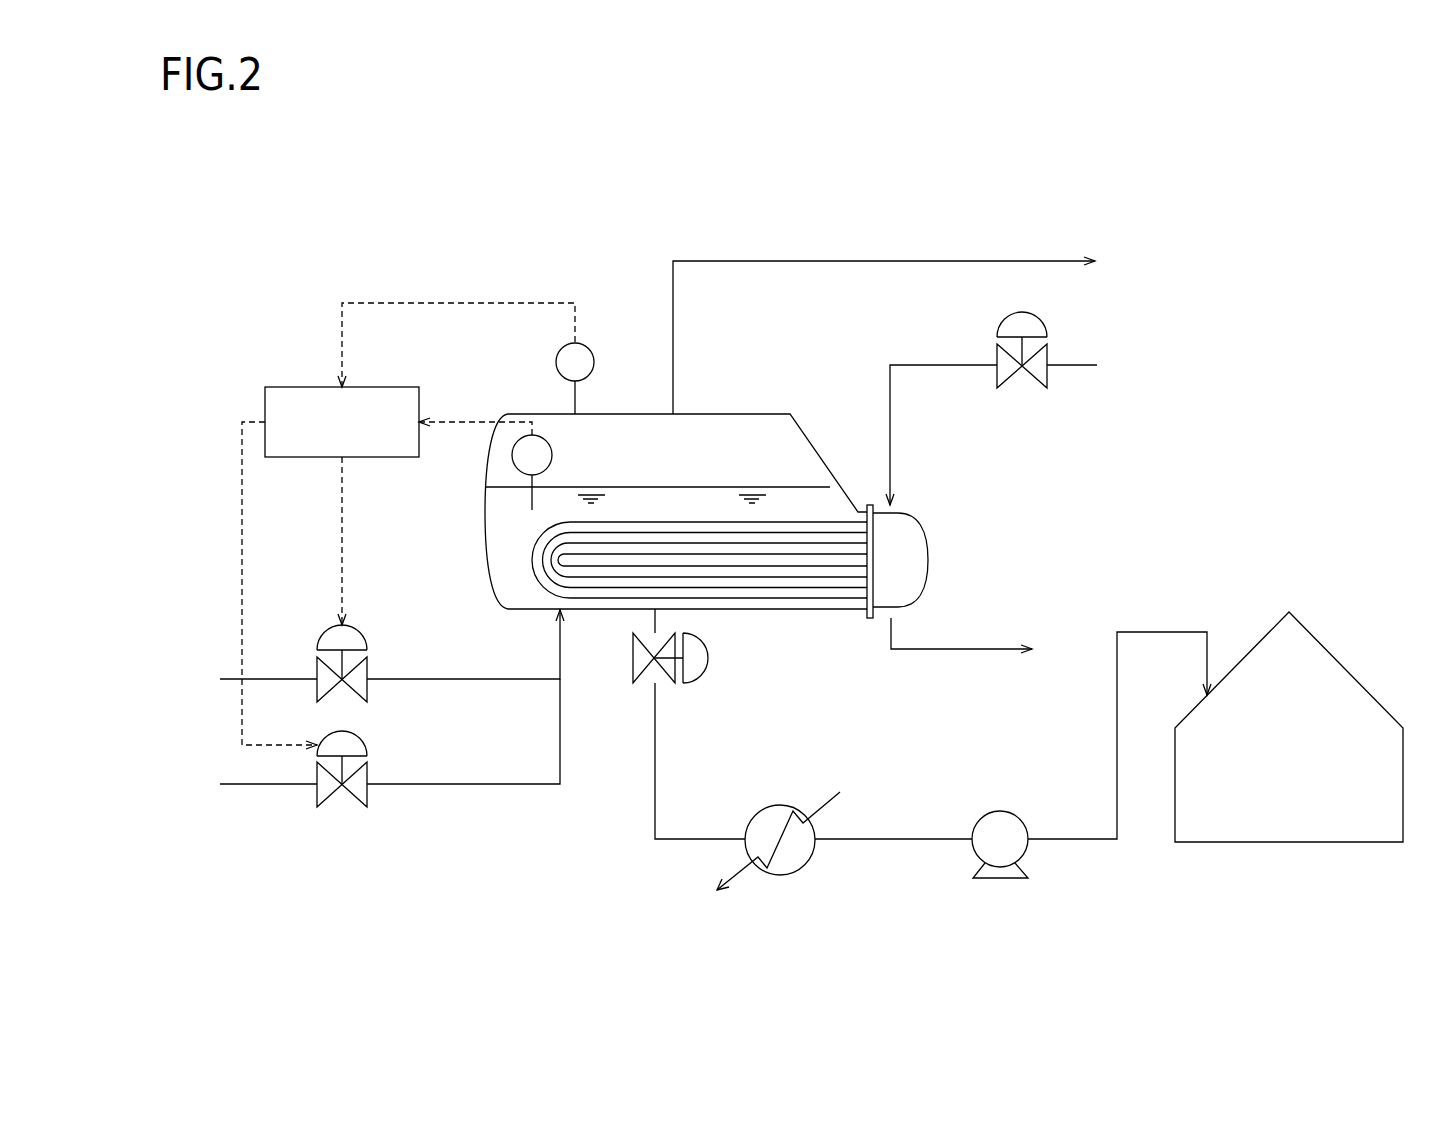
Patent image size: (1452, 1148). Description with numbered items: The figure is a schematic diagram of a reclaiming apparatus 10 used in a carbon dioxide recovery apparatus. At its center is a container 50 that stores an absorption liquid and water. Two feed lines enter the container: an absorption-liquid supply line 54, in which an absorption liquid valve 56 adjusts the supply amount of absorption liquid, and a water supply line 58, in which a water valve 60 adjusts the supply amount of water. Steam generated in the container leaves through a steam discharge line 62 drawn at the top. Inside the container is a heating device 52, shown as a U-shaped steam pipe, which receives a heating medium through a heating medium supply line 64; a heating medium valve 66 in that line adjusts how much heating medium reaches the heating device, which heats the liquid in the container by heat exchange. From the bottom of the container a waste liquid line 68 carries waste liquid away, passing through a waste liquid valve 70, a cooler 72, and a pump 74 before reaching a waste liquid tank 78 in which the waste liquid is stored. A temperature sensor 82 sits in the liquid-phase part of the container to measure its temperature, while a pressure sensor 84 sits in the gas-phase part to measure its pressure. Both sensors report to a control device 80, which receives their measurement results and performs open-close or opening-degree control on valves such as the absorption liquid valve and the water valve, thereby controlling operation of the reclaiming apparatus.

The reclaiming apparatus 10 is at (1342, 197).
The container 50 is at (765, 412).
The heating device 52 is at (810, 610).
The absorption-liquid supply line 54 is at (280, 675).
The absorption liquid valve 56 is at (367, 637).
The water supply line 58 is at (275, 790).
The water valve 60 is at (367, 745).
The steam discharge line 62 is at (808, 260).
The heating medium supply line 64 is at (938, 363).
The heating medium valve 66 is at (1045, 323).
The waste liquid line 68 is at (657, 765).
The waste liquid valve 70 is at (708, 672).
The cooler 72 is at (782, 878).
The pump 74 is at (1018, 815).
The waste liquid tank 78 is at (1368, 695).
The control device 80 is at (285, 386).
The temperature sensor 82 is at (545, 440).
The pressure sensor 84 is at (590, 345).